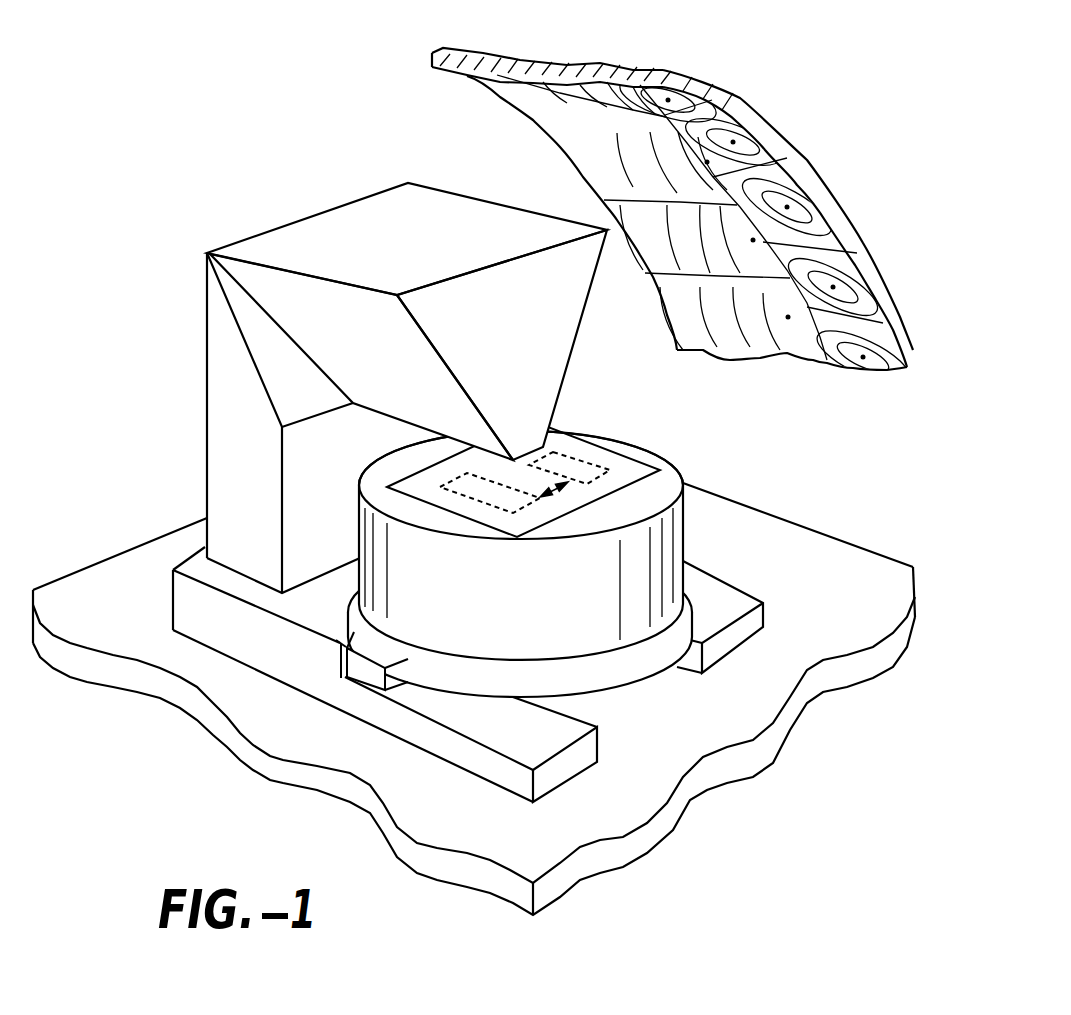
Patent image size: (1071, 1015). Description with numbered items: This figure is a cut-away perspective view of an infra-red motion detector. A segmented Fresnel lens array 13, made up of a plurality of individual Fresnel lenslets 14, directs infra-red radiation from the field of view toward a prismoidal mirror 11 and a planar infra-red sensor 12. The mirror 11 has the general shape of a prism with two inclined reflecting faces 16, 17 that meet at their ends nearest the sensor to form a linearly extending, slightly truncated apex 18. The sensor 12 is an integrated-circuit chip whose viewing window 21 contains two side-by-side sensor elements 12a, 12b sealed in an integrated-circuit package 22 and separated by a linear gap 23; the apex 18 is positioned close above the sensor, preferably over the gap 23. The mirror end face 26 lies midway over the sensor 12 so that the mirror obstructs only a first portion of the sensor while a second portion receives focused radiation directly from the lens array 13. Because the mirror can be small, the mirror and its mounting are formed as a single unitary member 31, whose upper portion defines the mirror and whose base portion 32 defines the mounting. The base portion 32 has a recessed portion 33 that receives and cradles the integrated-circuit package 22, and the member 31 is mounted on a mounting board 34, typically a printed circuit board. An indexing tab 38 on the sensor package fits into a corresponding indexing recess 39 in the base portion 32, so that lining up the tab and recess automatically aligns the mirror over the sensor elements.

The prismoidal mirror 11 is at (383, 321).
The infra-red sensor 12 is at (545, 517).
The sensor element 12a is at (497, 490).
The sensor element 12b is at (557, 450).
The segmented Fresnel lens array 13 is at (673, 219).
The Fresnel lenslets 14 is at (735, 141).
The reflecting face 16 is at (367, 350).
The reflecting face 17 is at (578, 337).
The apex 18 is at (437, 437).
The viewing window 21 is at (623, 483).
The integrated-circuit package 22 is at (685, 527).
The linear gap 23 is at (562, 490).
The mirror end face 26 is at (473, 288).
The unitary member 31 is at (191, 468).
The base portion 32 is at (477, 757).
The recessed portion 33 is at (343, 617).
The mounting board 34 is at (800, 547).
The indexing tab 38 is at (392, 653).
The indexing recess 39 is at (340, 641).